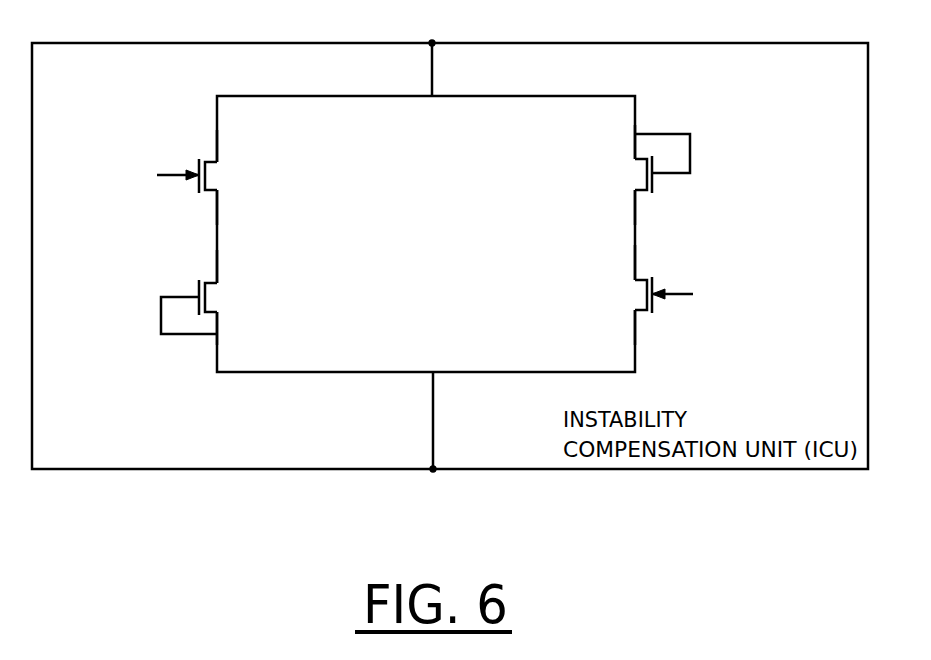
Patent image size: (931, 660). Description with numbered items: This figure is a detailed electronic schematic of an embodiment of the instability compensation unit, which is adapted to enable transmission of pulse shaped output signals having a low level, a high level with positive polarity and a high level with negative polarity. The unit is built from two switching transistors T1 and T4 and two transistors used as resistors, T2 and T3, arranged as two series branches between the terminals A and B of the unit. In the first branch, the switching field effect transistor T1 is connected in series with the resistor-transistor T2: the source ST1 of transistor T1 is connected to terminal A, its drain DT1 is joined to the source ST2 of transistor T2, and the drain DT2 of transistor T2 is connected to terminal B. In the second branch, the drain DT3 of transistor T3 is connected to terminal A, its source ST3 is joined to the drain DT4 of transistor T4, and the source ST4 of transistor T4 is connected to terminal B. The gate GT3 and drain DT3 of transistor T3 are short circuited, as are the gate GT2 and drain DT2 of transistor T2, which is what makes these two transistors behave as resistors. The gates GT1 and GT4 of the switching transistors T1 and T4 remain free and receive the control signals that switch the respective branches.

The terminal A is at (441, 68).
The terminal B is at (444, 422).
The switching field effect transistor T1 is at (223, 176).
The transistor used as resistor T2 is at (223, 297).
The transistor used as resistor T3 is at (619, 174).
The switching transistor T4 is at (622, 295).
The gate of transistor T1 GT1 is at (178, 161).
The gate of transistor T2 GT2 is at (185, 301).
The gate of transistor T3 GT3 is at (668, 169).
The gate of transistor T4 GT4 is at (682, 311).
The source of transistor T1 ST1 is at (238, 146).
The source of transistor T2 ST2 is at (238, 266).
The source of transistor T3 ST3 is at (611, 207).
The source of transistor T4 ST4 is at (614, 327).
The drain of transistor T1 DT1 is at (241, 207).
The drain of transistor T2 DT2 is at (241, 328).
The drain of transistor T3 DT3 is at (611, 142).
The drain of transistor T4 DT4 is at (614, 262).